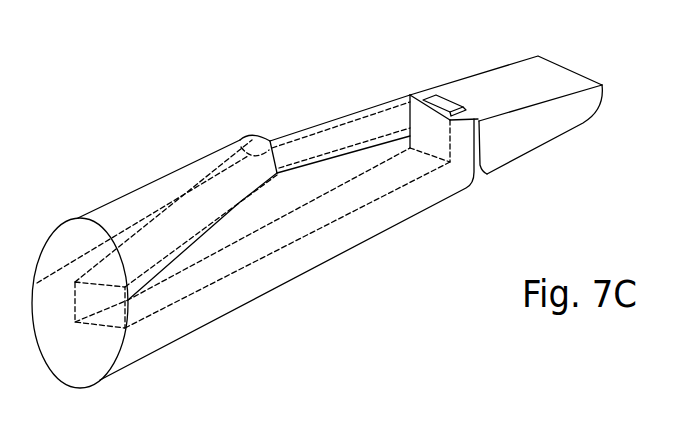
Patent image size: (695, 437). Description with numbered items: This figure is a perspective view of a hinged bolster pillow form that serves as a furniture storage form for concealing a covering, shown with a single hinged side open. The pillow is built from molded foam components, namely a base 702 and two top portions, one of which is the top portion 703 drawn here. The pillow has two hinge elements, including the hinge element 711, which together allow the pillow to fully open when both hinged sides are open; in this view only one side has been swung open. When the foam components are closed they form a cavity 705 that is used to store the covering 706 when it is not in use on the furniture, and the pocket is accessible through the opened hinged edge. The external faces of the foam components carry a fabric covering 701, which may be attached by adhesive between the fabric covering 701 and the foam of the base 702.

The fabric covering 701 is at (367, 240).
The base 702 is at (260, 278).
The top portion 703 is at (547, 77).
The cavity 705 is at (248, 136).
The covering 706 is at (392, 125).
The hinge element 711 is at (444, 100).